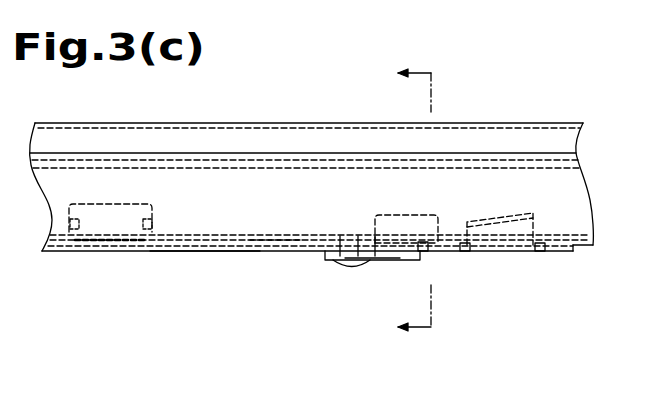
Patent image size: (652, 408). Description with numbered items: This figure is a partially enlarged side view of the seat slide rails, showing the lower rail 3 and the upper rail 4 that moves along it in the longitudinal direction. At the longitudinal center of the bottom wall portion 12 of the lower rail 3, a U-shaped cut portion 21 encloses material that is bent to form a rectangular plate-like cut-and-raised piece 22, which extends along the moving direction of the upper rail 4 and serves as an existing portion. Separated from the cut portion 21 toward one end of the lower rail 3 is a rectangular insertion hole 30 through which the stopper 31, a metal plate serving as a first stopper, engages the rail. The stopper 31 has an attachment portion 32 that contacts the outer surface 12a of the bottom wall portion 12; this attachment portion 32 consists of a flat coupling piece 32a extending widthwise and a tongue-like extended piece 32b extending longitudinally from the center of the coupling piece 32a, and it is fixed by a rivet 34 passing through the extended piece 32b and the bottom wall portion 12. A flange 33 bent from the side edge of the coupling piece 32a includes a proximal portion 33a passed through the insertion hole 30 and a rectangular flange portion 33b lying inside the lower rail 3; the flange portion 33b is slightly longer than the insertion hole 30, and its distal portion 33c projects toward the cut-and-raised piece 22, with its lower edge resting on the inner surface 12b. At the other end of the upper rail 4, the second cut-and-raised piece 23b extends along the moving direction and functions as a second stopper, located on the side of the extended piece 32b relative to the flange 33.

The lower rail 3 is at (575, 253).
The upper rail 4 is at (577, 92).
The bottom wall portion 12 is at (182, 256).
The outer surface 12a is at (232, 256).
The inner surface 12b is at (272, 240).
The cut portion 21 is at (533, 252).
The cut-and-raised piece 22 is at (532, 214).
The second cut-and-raised piece 23b is at (73, 252).
The insertion hole 30 is at (417, 260).
The stopper 31 is at (377, 262).
The attachment portion 32 is at (347, 263).
The coupling piece 32a is at (395, 260).
The extended piece 32b is at (328, 258).
The flange 33 is at (422, 213).
The proximal portion 33a is at (435, 252).
The flange portion 33b is at (385, 215).
The distal portion 33c is at (440, 222).
The rivet 34 is at (335, 262).